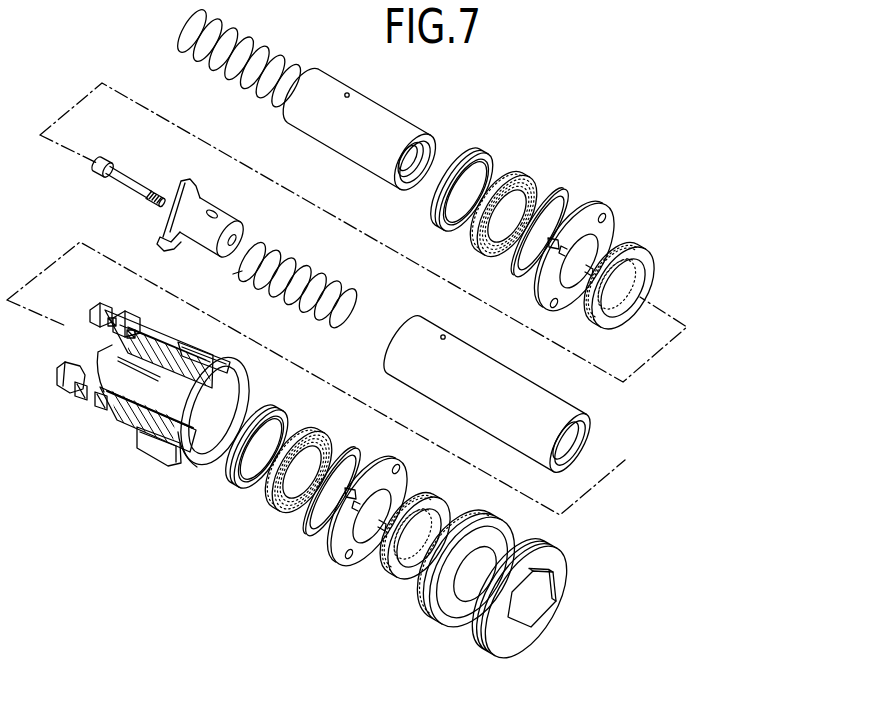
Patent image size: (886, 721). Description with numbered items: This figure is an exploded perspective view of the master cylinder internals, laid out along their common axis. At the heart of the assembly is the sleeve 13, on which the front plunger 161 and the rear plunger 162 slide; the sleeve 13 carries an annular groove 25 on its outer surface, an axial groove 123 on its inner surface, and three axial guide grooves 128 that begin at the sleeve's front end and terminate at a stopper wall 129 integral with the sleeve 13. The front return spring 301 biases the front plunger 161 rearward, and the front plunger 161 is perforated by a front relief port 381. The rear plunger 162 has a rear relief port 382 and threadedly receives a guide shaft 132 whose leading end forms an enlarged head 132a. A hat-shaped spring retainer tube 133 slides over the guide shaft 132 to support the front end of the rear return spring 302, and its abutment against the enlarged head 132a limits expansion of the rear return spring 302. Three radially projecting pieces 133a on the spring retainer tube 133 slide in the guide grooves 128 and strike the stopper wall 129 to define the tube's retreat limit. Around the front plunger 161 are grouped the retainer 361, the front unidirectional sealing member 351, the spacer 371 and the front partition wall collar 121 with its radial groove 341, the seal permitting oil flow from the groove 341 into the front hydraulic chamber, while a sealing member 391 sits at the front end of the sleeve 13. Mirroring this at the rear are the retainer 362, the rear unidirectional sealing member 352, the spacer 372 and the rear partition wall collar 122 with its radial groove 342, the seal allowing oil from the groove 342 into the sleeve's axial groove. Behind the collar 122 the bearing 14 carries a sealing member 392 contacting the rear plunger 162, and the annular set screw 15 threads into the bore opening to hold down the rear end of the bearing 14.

The front return spring 301 is at (241, 34).
The rear return spring 302 is at (300, 262).
The guide shaft 132 is at (122, 168).
The enlarged head 132a is at (101, 157).
The spring retainer tube 133 is at (184, 210).
The projecting pieces 133a is at (151, 234).
The front plunger 161 is at (363, 131).
The rear plunger 162 is at (491, 397).
The front relief port 381 is at (348, 93).
The rear relief port 382 is at (443, 340).
The retainer 361 is at (471, 151).
The retainer 362 is at (270, 406).
The front unidirectional sealing member 351 is at (515, 174).
The rear unidirectional sealing member 352 is at (308, 428).
The spacer 371 is at (552, 199).
The spacer 372 is at (346, 451).
The radial groove 341 is at (556, 244).
The radial groove 342 is at (352, 492).
The front partition wall collar 121 is at (592, 204).
The rear partition wall collar 122 is at (384, 458).
The sealing member 391 is at (637, 245).
The sealing member 392 is at (432, 495).
The sleeve 13 is at (165, 384).
The annular groove 25 is at (121, 315).
The axial guide grooves 128 is at (114, 347).
The stopper wall 129 is at (160, 375).
The axial groove 123 is at (186, 428).
The bearing 14 is at (499, 526).
The annular set screw 15 is at (560, 558).